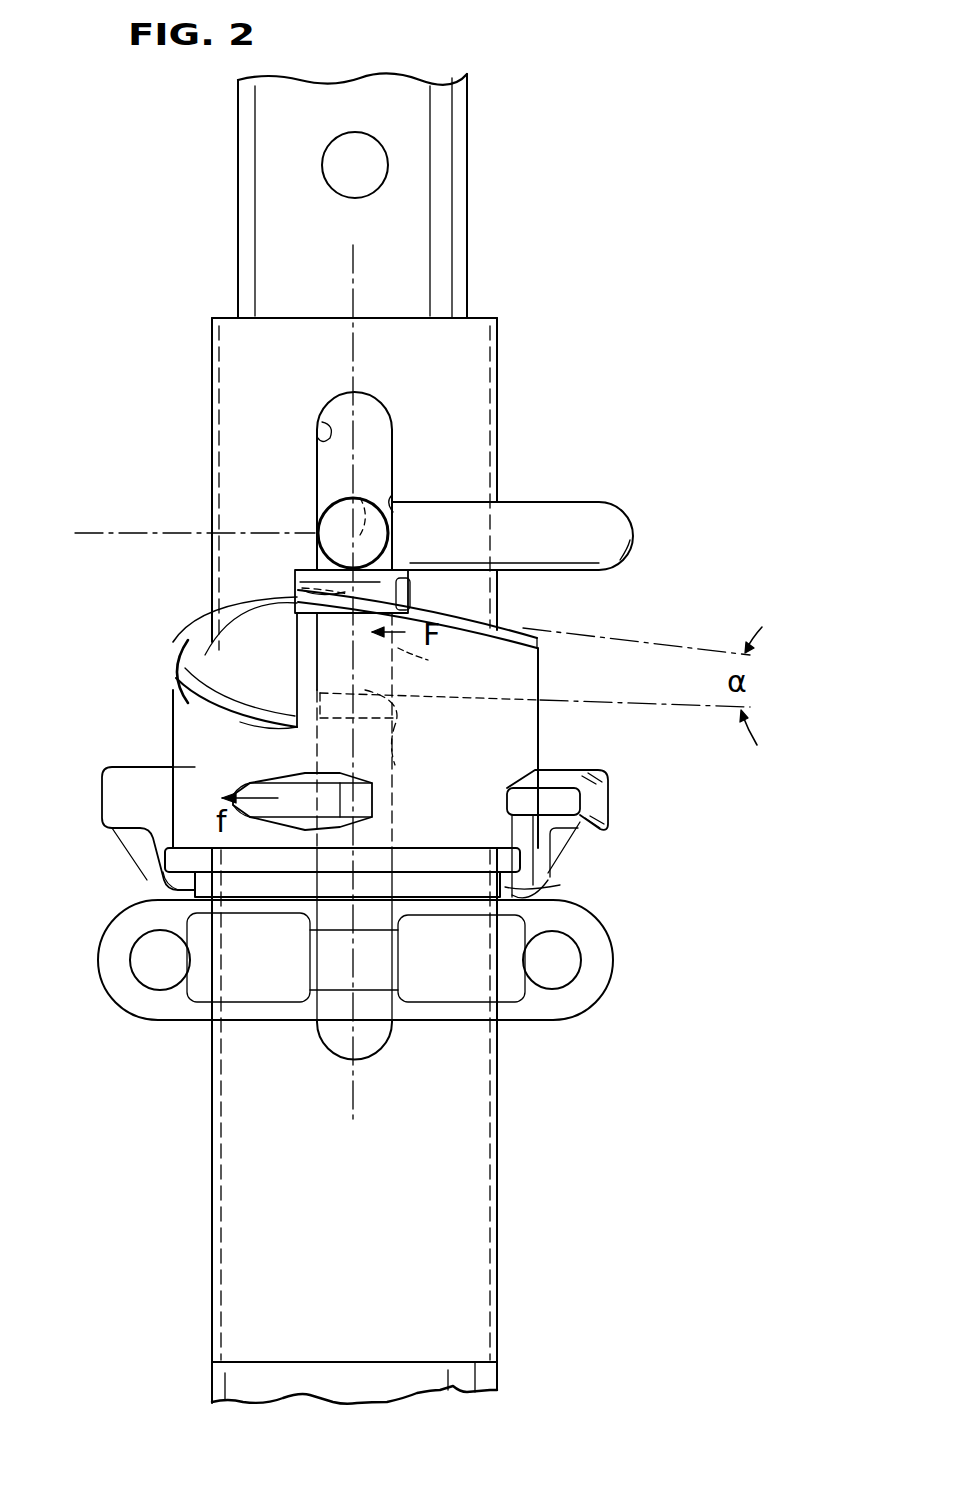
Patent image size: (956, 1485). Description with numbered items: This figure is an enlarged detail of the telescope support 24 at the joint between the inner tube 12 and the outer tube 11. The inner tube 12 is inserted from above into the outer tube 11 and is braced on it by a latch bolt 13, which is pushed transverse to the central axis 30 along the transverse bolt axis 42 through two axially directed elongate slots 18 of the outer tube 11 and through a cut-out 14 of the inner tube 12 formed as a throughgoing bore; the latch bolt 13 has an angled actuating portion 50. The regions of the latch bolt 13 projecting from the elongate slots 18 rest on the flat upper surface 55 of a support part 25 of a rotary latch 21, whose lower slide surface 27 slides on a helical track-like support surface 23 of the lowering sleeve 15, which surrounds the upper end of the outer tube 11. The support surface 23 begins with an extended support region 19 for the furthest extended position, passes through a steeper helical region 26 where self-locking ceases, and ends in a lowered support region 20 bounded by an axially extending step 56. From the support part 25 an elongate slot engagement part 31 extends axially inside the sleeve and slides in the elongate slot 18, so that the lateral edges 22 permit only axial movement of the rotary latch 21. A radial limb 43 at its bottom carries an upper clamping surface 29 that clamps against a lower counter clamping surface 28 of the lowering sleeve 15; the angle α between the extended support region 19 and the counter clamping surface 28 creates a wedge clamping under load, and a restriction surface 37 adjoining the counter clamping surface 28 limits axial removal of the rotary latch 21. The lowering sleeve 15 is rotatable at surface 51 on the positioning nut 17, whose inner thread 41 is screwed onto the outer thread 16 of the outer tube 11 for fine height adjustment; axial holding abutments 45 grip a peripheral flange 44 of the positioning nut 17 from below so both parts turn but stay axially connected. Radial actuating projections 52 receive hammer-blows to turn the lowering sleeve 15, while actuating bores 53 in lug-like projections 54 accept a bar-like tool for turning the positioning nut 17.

The outer tube 11 is at (455, 1188).
The inner tube 12 is at (445, 200).
The latch bolt 13 is at (335, 520).
The cut-out 14 is at (378, 152).
The lowering sleeve 15 is at (538, 735).
The outer thread 16 is at (497, 1100).
The positioning nut 17 is at (275, 1021).
The elongate slot 18 is at (392, 1078).
The extended support region 19 is at (354, 816).
The lowered support region 20 is at (268, 740).
The rotary latch 21 is at (335, 628).
The lateral edges 22 is at (322, 430).
The support surface 23 is at (190, 650).
The telescope support 24 is at (125, 640).
The support part 25 is at (400, 598).
The helical region 26 is at (178, 690).
The slide surface 27 is at (300, 590).
The counter clamping surface 28 is at (430, 686).
The clamping surface 29 is at (393, 716).
The central axis 30 is at (348, 296).
The elongate slot engagement part 31 is at (433, 661).
The restriction surface 37 is at (500, 700).
The inner thread 41 is at (215, 1028).
The pivot axis 42 is at (130, 530).
The limb 43 is at (393, 765).
The peripheral flange 44 is at (465, 846).
The axial holding abutments 45 is at (160, 886).
The actuating portion 50 is at (585, 520).
The rotatable surface 51 is at (210, 845).
The radial actuating projections 52 is at (110, 800).
The actuating bores 53 is at (152, 972).
The lug-like projections 54 is at (570, 1012).
The flat upper surface 55 is at (305, 570).
The axially extending step 56 is at (293, 625).